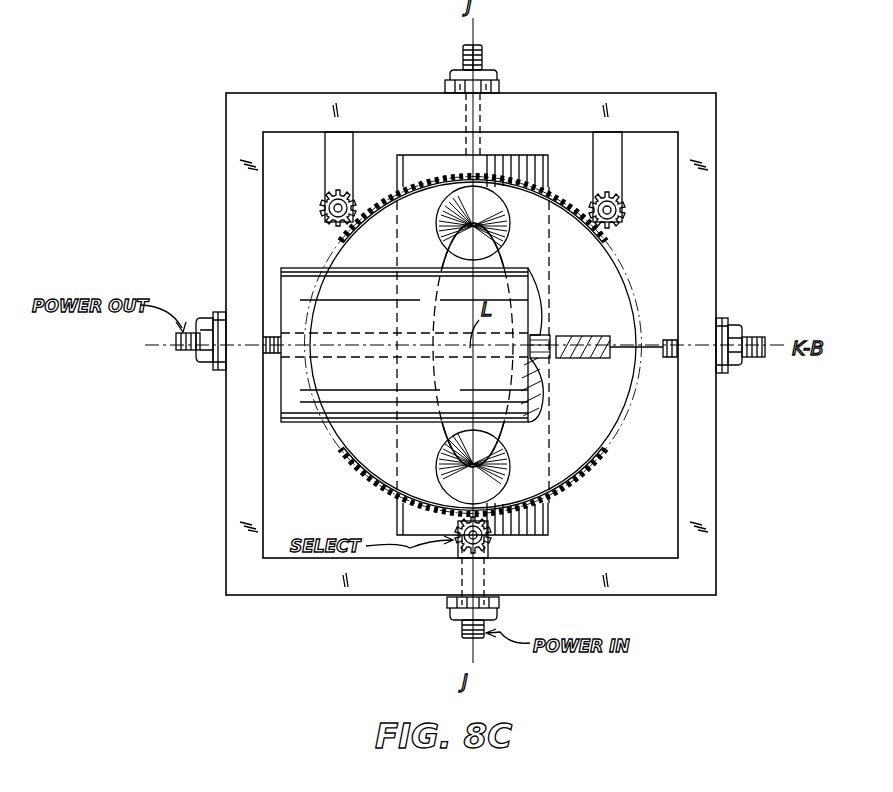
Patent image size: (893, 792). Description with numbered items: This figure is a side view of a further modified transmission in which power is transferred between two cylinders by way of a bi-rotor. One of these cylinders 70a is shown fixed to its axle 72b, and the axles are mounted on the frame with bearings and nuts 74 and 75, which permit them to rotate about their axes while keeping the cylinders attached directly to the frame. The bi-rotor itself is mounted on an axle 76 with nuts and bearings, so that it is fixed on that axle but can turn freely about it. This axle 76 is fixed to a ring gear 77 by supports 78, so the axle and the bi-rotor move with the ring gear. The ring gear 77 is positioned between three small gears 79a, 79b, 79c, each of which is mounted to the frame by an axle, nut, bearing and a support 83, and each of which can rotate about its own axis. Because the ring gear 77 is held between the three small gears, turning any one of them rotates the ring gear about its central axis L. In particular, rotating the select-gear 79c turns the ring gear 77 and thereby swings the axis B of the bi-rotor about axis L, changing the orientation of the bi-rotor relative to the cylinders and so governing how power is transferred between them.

The cylinder 70a is at (546, 166).
The axle 72b is at (206, 364).
The nut 74 is at (500, 600).
The nut 75 is at (494, 78).
The axle 76 is at (549, 336).
The ring gear 77 is at (366, 198).
The support 78 is at (597, 336).
The small gear 79a is at (326, 202).
The small gear 79b is at (622, 200).
The select-gear 79c is at (484, 540).
The support 83 is at (348, 148).